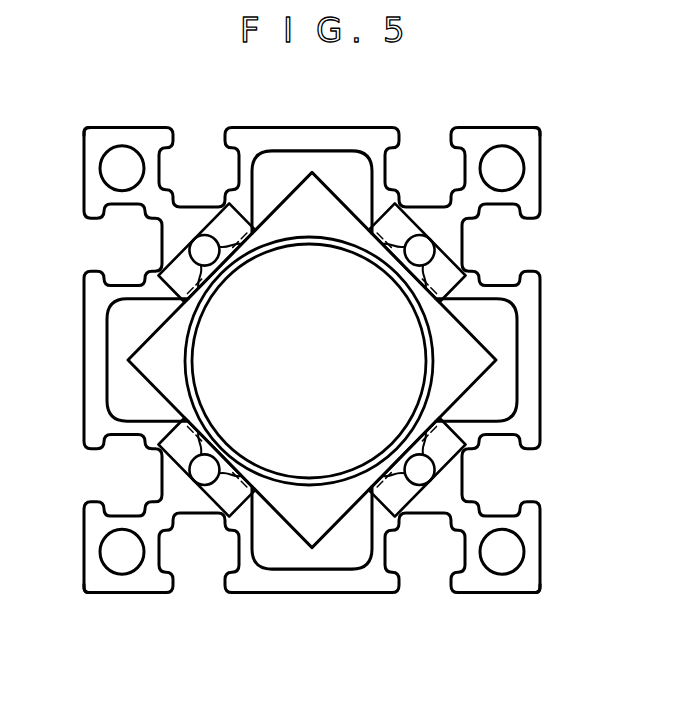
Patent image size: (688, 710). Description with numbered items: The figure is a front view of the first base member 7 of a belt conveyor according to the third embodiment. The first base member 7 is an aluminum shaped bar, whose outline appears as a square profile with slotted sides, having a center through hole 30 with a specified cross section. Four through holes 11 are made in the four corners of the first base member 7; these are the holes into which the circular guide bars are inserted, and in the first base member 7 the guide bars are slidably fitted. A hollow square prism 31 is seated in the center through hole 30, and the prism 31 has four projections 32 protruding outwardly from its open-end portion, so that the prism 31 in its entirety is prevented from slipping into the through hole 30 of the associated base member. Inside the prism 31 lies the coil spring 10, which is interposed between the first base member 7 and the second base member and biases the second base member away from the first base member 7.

The first base member 7 is at (385, 130).
The coil spring 10 is at (432, 375).
The through holes 11 is at (140, 157).
The center through hole 30 is at (270, 175).
The hollow square prism 31 is at (301, 511).
The projection 32 is at (180, 268).